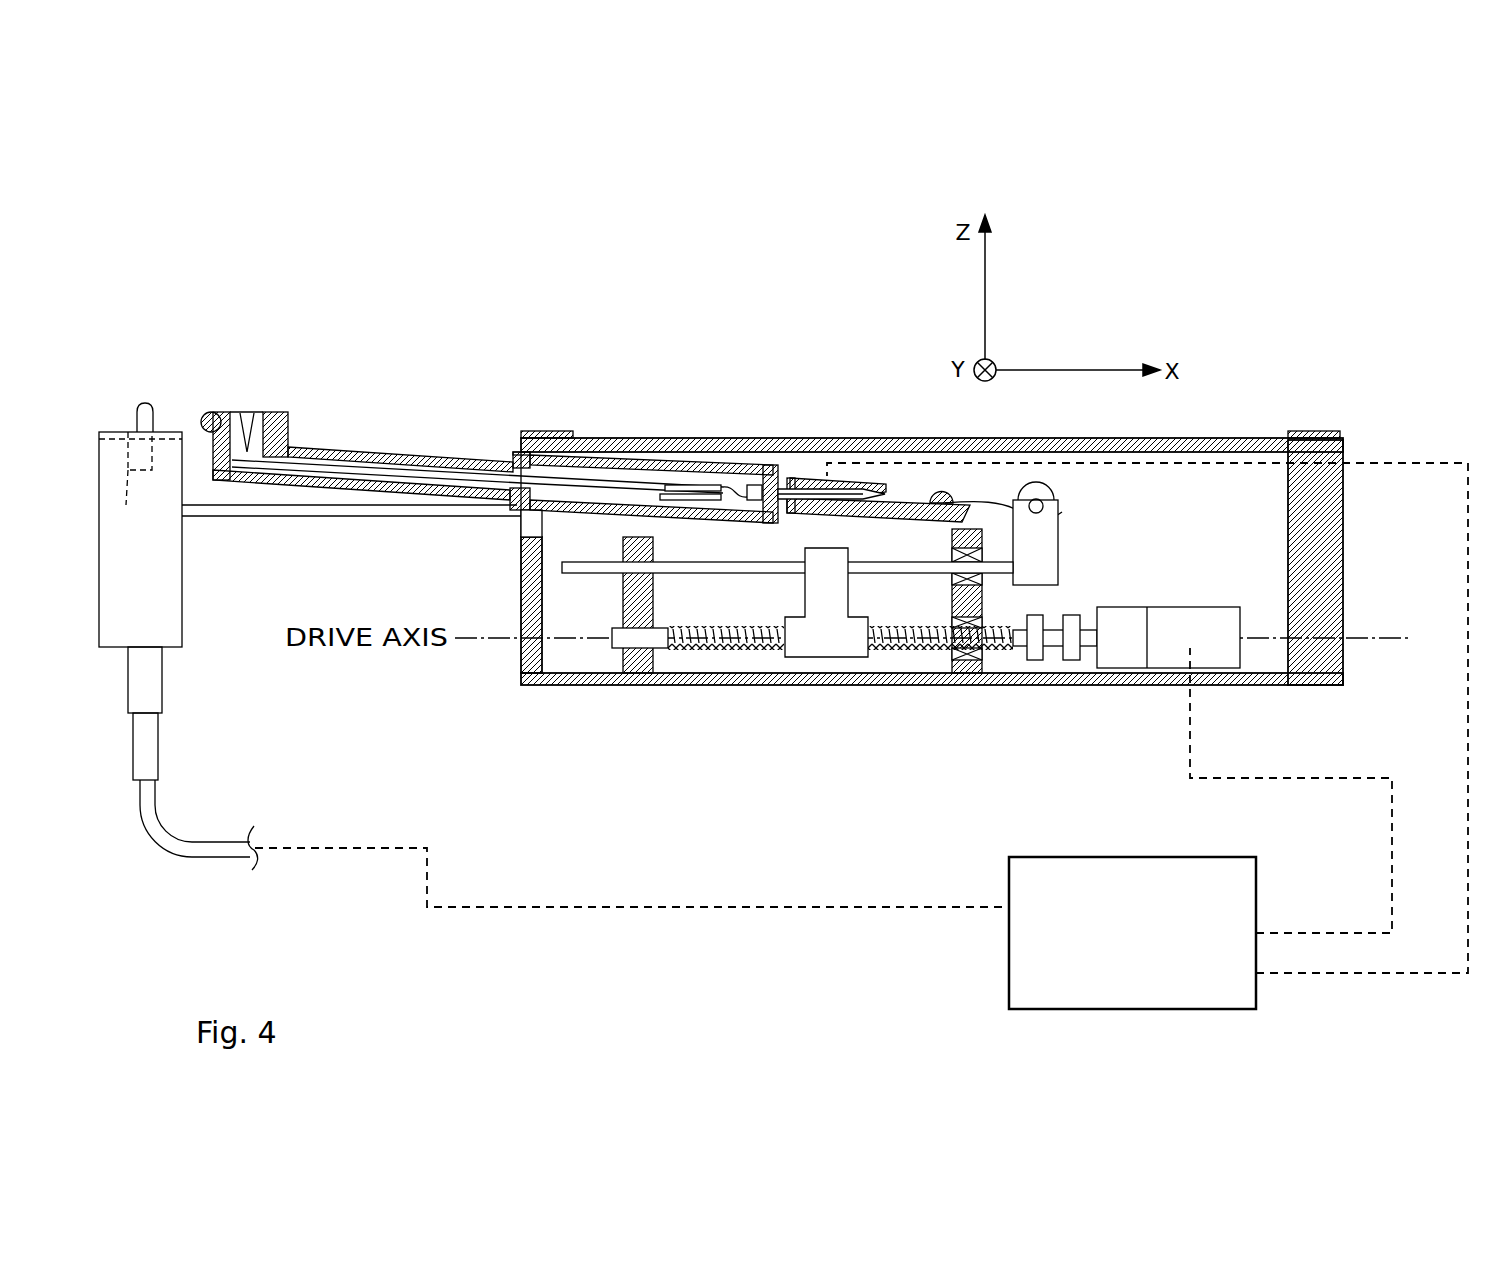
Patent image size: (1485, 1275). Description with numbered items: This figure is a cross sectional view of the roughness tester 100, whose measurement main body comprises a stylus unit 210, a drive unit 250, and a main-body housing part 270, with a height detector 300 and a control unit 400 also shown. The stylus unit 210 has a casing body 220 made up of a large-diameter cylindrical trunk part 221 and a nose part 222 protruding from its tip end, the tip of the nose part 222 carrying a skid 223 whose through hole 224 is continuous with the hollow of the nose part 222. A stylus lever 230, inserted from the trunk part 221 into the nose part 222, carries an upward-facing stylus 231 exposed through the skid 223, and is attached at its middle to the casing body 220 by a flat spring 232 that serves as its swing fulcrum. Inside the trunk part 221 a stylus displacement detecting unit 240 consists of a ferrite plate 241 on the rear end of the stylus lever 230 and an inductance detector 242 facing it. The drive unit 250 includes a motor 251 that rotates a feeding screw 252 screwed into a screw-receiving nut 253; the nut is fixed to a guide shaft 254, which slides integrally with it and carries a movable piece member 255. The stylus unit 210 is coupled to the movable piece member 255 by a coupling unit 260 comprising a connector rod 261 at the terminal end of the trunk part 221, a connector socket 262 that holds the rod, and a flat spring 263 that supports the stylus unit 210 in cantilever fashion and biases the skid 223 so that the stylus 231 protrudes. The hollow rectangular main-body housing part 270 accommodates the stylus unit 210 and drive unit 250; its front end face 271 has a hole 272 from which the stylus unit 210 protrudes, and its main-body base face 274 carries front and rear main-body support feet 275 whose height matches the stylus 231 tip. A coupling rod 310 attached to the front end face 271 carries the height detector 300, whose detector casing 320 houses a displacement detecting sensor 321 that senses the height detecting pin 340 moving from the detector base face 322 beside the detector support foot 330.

The roughness tester 100 is at (728, 285).
The stylus unit 210 is at (338, 422).
The casing body 220 is at (622, 438).
The trunk part 221 is at (583, 438).
The nose part 222 is at (382, 448).
The skid 223 is at (212, 418).
The through hole 224 is at (240, 412).
The stylus lever 230 is at (644, 445).
The stylus 231 is at (257, 413).
The flat spring 232 is at (535, 528).
The stylus displacement detecting unit 240 is at (712, 438).
The ferrite plate 241 is at (697, 438).
The inductance detector 242 is at (707, 496).
The drive unit 250 is at (925, 653).
The motor 251 is at (1165, 655).
The feeding screw 252 is at (713, 652).
The screw-receiving nut 253 is at (822, 657).
The guide shaft 254 is at (714, 573).
The movable piece member 255 is at (1047, 547).
The coupling unit 260 is at (998, 489).
The connector rod 261 is at (867, 478).
The connector socket 262 is at (897, 487).
The flat spring 263 is at (1058, 512).
The main-body housing part 270 is at (765, 438).
The front end face 271 is at (521, 655).
The hole 272 is at (515, 518).
The main-body base face 274 is at (863, 438).
The main-body support foot 275 is at (550, 431).
The height detector 300 is at (172, 611).
The coupling rod 310 is at (357, 506).
The detector casing 320 is at (182, 556).
The displacement detecting sensor 321 is at (129, 486).
The detector base face 322 is at (129, 430).
The detector support foot 330 is at (113, 432).
The height detecting pin 340 is at (150, 410).
The control unit 400 is at (1033, 965).